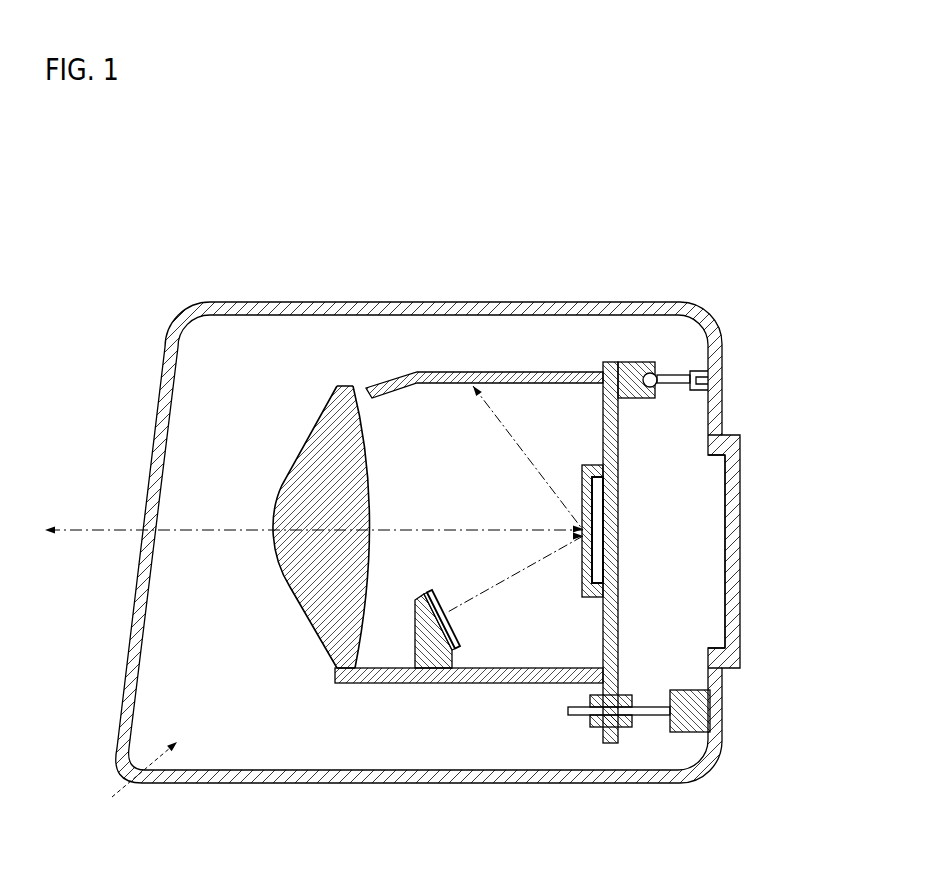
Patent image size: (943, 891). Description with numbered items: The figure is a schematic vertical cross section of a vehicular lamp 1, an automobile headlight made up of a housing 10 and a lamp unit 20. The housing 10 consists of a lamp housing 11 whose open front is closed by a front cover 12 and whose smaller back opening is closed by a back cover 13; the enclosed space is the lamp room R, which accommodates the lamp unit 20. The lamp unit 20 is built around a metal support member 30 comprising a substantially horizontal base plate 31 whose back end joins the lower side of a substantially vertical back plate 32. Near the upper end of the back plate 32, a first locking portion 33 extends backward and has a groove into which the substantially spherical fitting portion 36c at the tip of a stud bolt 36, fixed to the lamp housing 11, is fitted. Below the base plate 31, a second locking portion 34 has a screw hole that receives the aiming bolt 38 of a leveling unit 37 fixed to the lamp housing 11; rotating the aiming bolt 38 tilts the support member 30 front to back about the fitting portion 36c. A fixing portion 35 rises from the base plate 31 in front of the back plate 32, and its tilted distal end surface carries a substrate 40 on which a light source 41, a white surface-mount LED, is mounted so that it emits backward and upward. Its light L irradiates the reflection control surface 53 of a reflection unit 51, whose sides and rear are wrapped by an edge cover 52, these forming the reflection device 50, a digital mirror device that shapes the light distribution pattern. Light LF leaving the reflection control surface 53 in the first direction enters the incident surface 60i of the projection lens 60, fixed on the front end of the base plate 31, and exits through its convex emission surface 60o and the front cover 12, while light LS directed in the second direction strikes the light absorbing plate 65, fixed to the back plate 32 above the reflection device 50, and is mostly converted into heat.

The vehicular lamp 1 is at (147, 183).
The housing 10 is at (265, 168).
The lamp housing 11 is at (340, 302).
The front cover 12 is at (268, 302).
The back cover 13 is at (742, 474).
The lamp unit 20 is at (280, 373).
The support member 30 is at (596, 366).
The base plate 31 is at (553, 682).
The back plate 32 is at (615, 523).
The first locking portion 33 is at (630, 363).
The second locking portion 34 is at (598, 740).
The fixing portion 35 is at (414, 640).
The stud bolt 36 is at (683, 375).
The fitting portion 36c is at (650, 372).
The leveling unit 37 is at (712, 712).
The aiming bolt 38 is at (647, 716).
The substrate 40 is at (455, 652).
The light source 41 is at (463, 640).
The reflection device 50 is at (571, 455).
The reflection unit 51 is at (582, 557).
The edge cover 52 is at (594, 478).
The reflection control surface 53 is at (582, 573).
The projection lens 60 is at (317, 443).
The emission surface 60o is at (302, 624).
The incident surface 60i is at (373, 618).
The light absorbing plate 65 is at (445, 372).
The light L is at (486, 596).
The light emitted toward the second direction LS is at (490, 407).
The light emitted toward the first direction LF is at (203, 540).
The lamp room R is at (138, 782).